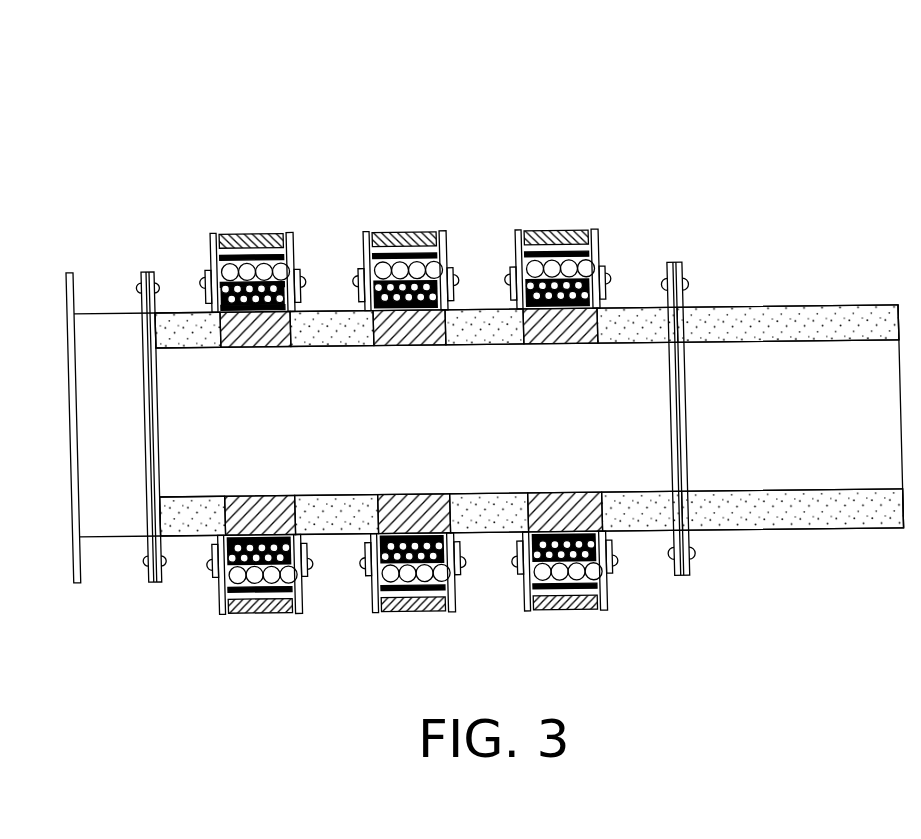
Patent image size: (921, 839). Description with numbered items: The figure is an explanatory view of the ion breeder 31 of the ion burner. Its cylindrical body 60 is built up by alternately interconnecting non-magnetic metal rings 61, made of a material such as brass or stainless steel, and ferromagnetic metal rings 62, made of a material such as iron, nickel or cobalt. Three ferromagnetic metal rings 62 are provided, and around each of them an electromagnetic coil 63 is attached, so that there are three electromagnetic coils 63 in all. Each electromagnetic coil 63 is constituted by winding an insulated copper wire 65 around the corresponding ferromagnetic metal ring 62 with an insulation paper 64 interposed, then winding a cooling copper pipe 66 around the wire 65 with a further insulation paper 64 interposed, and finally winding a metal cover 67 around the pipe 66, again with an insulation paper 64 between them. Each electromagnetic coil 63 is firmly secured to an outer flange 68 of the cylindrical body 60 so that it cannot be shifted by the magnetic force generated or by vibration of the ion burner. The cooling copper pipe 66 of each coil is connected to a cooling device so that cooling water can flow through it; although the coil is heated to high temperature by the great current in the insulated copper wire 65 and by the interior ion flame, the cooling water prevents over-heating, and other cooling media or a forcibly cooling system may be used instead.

The ion breeder 31 is at (721, 68).
The cylindrical body 60 is at (177, 320).
The non-magnetic metal ring 61 is at (188, 504).
The ferromagnetic metal ring 62 is at (258, 501).
The electromagnetic coil 63 is at (412, 380).
The insulation paper 64 is at (302, 222).
The insulated copper wire 65 is at (301, 235).
The cooling copper pipe 66 is at (268, 239).
The metal cover 67 is at (250, 207).
The outer flange 68 is at (508, 273).